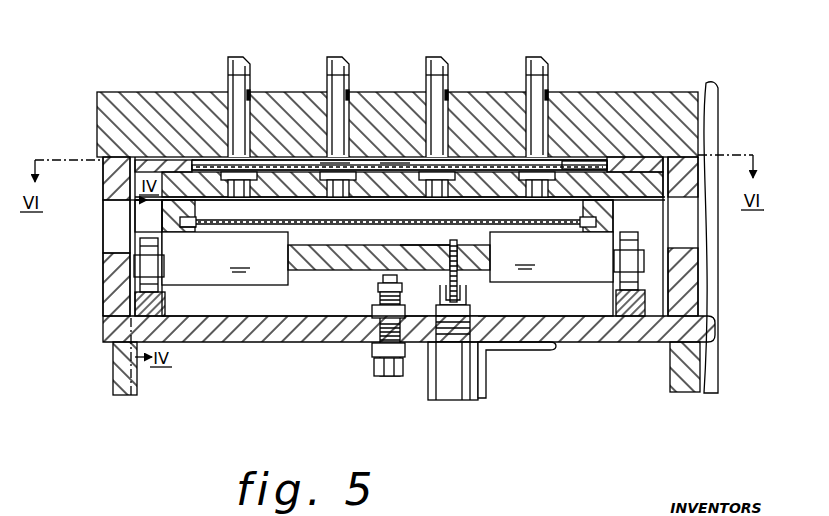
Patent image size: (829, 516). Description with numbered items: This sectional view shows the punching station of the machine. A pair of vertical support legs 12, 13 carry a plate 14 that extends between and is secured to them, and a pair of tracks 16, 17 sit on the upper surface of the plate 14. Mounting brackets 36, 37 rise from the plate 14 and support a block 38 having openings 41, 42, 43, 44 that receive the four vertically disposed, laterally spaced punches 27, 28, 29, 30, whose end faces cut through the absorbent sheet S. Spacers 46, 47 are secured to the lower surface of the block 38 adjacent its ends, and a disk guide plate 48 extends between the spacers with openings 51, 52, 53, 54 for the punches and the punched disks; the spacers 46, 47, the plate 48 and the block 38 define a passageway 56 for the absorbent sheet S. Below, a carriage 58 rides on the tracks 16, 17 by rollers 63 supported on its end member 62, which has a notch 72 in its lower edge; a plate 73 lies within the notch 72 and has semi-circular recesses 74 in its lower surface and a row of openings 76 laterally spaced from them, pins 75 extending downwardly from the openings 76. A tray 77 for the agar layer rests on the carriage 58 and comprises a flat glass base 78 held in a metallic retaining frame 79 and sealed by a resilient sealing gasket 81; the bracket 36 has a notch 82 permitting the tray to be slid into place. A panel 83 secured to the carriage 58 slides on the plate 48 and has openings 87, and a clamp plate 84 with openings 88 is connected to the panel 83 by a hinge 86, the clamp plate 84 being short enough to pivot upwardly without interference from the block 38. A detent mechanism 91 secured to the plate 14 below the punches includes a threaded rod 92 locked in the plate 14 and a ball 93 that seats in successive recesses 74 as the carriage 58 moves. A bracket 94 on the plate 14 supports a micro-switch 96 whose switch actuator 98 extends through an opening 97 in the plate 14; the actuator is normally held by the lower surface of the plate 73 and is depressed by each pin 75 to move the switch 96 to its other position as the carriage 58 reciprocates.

The vertical support leg 12 is at (119, 388).
The vertical support leg 13 is at (686, 388).
The plate 14 is at (222, 344).
The track 16 is at (160, 300).
The track 17 is at (616, 302).
The punch 27 is at (247, 78).
The punch 28 is at (346, 78).
The punch 29 is at (447, 78).
The punch 30 is at (547, 78).
The mounting bracket 36 is at (110, 297).
The mounting bracket 37 is at (690, 283).
The block 38 is at (126, 104).
The opening 41 is at (251, 93).
The opening 42 is at (350, 93).
The opening 43 is at (449, 93).
The opening 44 is at (550, 93).
The spacer 46 is at (116, 172).
The spacer 47 is at (643, 192).
The disk guide plate 48 is at (147, 216).
The opening 51 is at (241, 196).
The opening 52 is at (345, 196).
The opening 53 is at (444, 196).
The opening 54 is at (543, 196).
The passageway 56 is at (568, 160).
The carriage 58 is at (246, 297).
The end member 62 is at (265, 276).
The rollers 63 is at (140, 253).
The notch 72 is at (288, 250).
The plate 73 is at (428, 259).
The recesses 74 is at (380, 271).
The pins 75 is at (450, 251).
The openings 76 is at (466, 246).
The tray 77 is at (526, 237).
The flat base 78 is at (206, 230).
The retaining frame 79 is at (603, 224).
The sealing gasket 81 is at (197, 226).
The notch 82 is at (116, 223).
The panel 83 is at (397, 170).
The clamp plate 84 is at (393, 160).
The hinge 86 is at (606, 164).
The openings 87 is at (338, 170).
The openings 88 is at (456, 164).
The detent mechanism 91 is at (368, 355).
The threaded rod 92 is at (399, 372).
The ball 93 is at (400, 285).
The bracket 94 is at (530, 348).
The micro-switch 96 is at (451, 392).
The opening 97 is at (480, 324).
The switch actuator 98 is at (462, 296).
The absorbent sheet S is at (322, 160).